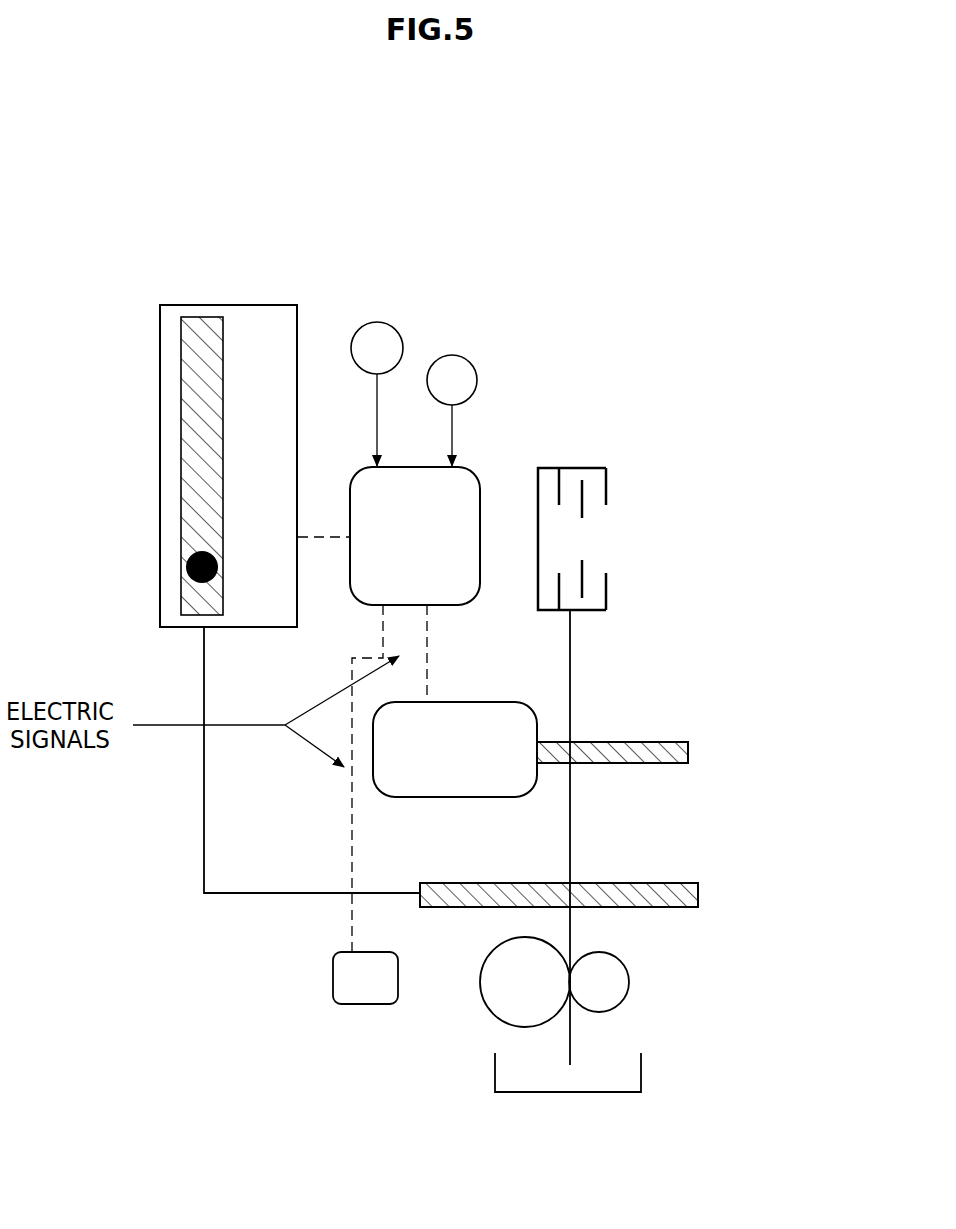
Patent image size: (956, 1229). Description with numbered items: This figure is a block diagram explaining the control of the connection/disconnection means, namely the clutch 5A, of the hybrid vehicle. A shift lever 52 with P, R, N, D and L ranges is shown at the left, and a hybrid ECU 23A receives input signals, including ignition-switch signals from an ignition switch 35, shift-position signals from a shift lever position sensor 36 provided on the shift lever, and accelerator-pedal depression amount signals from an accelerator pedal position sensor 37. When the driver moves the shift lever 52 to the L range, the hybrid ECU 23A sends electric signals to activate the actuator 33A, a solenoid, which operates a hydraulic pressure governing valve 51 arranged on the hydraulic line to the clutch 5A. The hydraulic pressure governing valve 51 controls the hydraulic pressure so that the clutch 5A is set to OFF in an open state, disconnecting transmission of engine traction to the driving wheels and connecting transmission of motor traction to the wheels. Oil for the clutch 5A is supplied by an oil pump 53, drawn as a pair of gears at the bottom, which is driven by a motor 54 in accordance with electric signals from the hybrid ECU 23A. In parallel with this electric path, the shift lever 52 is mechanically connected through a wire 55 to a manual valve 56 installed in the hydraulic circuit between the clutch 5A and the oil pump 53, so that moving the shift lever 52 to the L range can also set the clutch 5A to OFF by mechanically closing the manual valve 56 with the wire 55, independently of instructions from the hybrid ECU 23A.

The shift lever 52 is at (158, 520).
The ignition switch 35 is at (358, 394).
The shift lever position sensor 36 is at (322, 521).
The accelerator pedal position sensor 37 is at (463, 410).
The hybrid ECU 23A is at (475, 597).
The clutch 5A is at (587, 467).
The actuator 33A is at (455, 797).
The hydraulic pressure governing valve 51 is at (635, 742).
The manual valve 56 is at (625, 883).
The wire 55 is at (232, 893).
The motor 54 is at (364, 1005).
The oil pump 53 is at (626, 972).